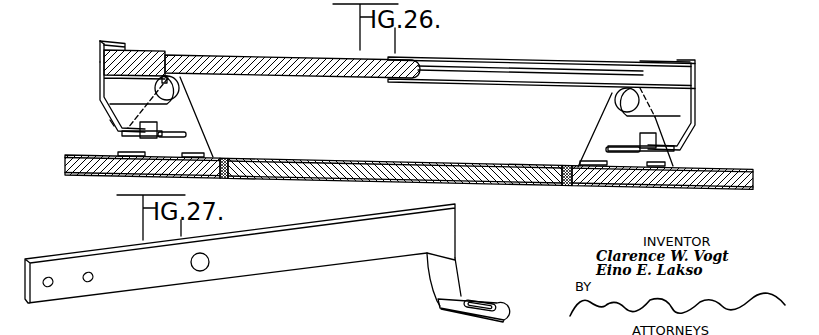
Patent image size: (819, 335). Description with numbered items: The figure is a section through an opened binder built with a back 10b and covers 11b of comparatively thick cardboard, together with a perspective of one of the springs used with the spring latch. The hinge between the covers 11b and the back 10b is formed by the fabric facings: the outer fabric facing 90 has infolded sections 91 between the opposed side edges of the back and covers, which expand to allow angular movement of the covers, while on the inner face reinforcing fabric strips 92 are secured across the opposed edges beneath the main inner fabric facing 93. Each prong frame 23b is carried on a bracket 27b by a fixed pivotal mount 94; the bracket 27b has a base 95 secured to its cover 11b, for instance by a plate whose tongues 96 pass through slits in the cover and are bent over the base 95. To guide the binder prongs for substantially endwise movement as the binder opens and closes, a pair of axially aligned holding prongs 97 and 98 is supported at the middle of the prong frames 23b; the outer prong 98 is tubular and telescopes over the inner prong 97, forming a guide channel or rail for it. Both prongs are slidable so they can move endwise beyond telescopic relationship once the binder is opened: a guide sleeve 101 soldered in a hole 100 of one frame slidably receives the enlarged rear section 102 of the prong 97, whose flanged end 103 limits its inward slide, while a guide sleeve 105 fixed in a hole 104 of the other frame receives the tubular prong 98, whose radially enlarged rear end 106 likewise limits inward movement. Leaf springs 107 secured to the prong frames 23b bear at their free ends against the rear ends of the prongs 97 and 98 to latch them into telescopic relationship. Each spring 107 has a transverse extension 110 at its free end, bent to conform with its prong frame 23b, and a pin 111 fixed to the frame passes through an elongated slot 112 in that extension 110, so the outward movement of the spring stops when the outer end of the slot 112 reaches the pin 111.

In FIG. 26, the back 10b is at (468, 163).
In FIG. 26, the covers 11b is at (88, 173).
In FIG. 26, the prong frames 23b is at (122, 133).
In FIG. 26, the brackets 27b is at (192, 115).
In FIG. 26, the outer fabric facing 90 is at (503, 187).
In FIG. 26, the infolded sections 91 is at (226, 157).
In FIG. 26, the reinforcing fabric strips 92 is at (272, 159).
In FIG. 26, the main inner fabric facing 93 is at (400, 160).
In FIG. 26, the fixed pivotal mounts 94 is at (180, 88).
In FIG. 26, the base 95 is at (124, 157).
In FIG. 26, the tongues 96 is at (122, 151).
In FIG. 26, the inner prong 97 is at (263, 56).
In FIG. 26, the outer tubular prong 98 is at (506, 60).
In FIG. 26, the hole 100 is at (104, 97).
In FIG. 26, the guide sleeve 101 is at (140, 52).
In FIG. 26, the enlarged rear section 102 is at (132, 49).
In FIG. 26, the flanged end 103 is at (104, 70).
In FIG. 26, the hole 104 is at (697, 110).
In FIG. 26, the guide sleeve 105 is at (638, 59).
In FIG. 26, the rear end 106 is at (697, 83).
In FIG. 26, the leaf springs 107 is at (100, 46).
In FIG. 27, the leaf springs 107 is at (346, 252).
In FIG. 26, the transverse extension 110 is at (118, 128).
In FIG. 27, the transverse extension 110 is at (452, 278).
In FIG. 26, the pin 111 is at (160, 124).
In FIG. 26, the elongated slot 112 is at (186, 134).
In FIG. 27, the elongated slot 112 is at (490, 308).